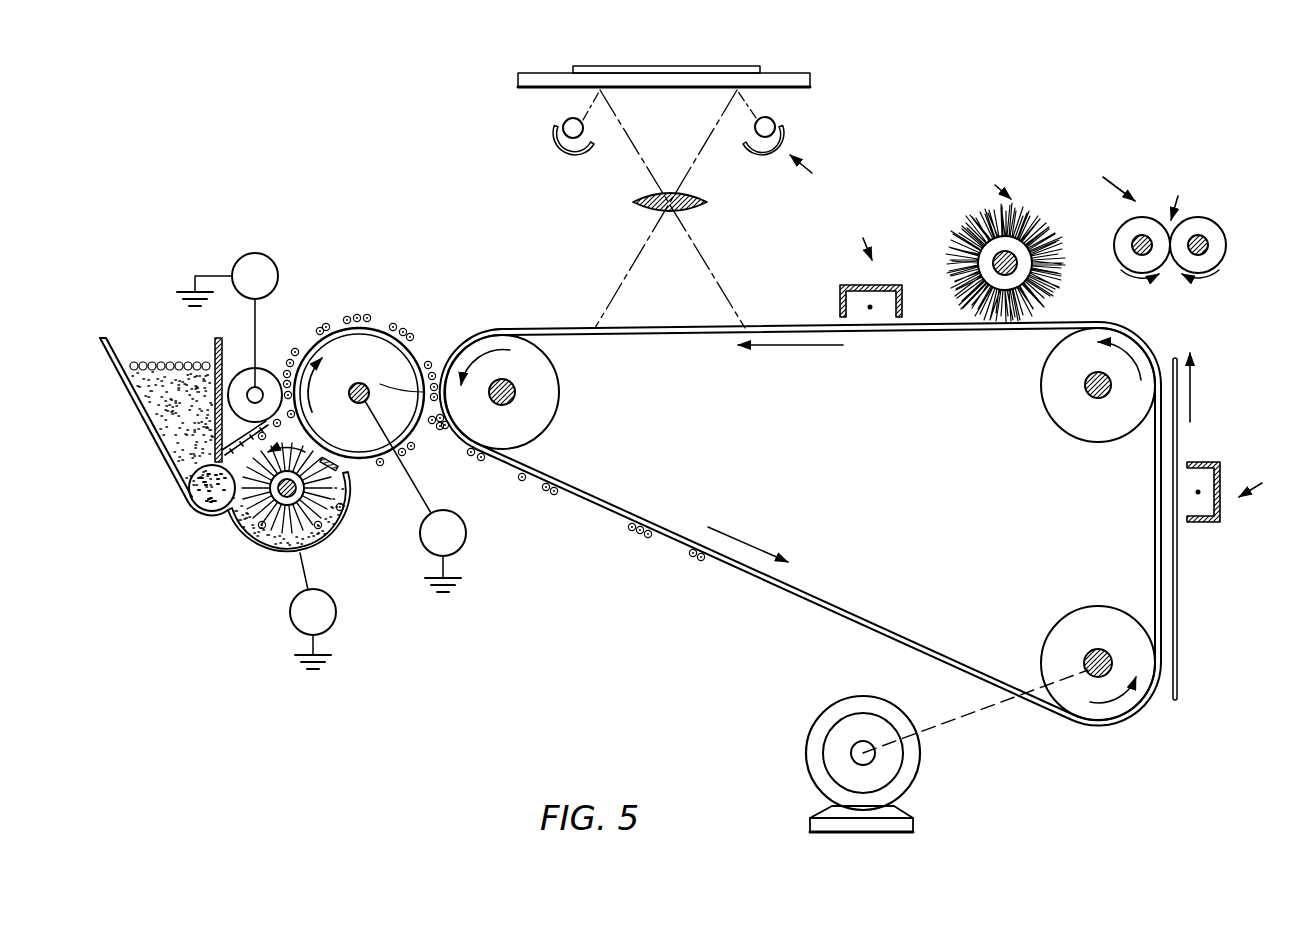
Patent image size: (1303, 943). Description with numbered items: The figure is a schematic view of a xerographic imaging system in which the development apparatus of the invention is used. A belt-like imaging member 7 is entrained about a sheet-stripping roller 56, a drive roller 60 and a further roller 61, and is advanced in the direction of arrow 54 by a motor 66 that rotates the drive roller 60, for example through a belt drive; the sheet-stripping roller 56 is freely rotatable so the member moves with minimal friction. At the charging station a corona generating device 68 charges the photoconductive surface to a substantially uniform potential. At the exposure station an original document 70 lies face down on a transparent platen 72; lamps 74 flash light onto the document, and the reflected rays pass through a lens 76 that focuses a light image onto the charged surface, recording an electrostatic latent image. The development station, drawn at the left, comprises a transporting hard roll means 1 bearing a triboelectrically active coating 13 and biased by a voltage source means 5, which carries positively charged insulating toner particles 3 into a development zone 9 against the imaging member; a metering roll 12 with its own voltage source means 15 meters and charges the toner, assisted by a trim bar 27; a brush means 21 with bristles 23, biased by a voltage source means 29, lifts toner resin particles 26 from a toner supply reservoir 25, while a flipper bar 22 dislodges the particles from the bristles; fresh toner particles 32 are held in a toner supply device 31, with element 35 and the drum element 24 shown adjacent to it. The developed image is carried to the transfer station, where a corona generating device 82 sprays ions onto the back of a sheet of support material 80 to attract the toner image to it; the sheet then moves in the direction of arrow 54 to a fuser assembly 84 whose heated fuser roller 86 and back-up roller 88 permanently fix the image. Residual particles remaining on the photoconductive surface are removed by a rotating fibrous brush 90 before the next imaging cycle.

The transporting hard roll means 1 is at (359, 370).
The toner particles 3 is at (401, 330).
The voltage source means 5 is at (459, 518).
The imaging member 7 is at (850, 502).
The development zone 9 is at (396, 377).
The metering roll 12 is at (270, 368).
The triboelectrically active coating 13 is at (331, 332).
The voltage source means 15 is at (276, 272).
The brush means 21 is at (343, 502).
The flipper bar 22 is at (336, 456).
The bristles 23 is at (342, 523).
The drum rotation 24 is at (317, 420).
The toner supply reservoir 25 is at (290, 552).
The toner resin particles 26 is at (243, 535).
The trim bar 27 is at (241, 433).
The voltage source means 29 is at (335, 602).
The toner supply device 31 is at (157, 457).
The toner particles 32 is at (170, 357).
The supply roller 35 is at (193, 510).
The arrow 54 is at (826, 350).
The sheet-stripping roller 56 is at (1042, 373).
The drive roller 60 is at (1065, 617).
The roller 61 is at (553, 391).
The motor 66 is at (838, 703).
The corona generating device 68 is at (898, 285).
The original document 70 is at (760, 68).
The transparent platen 72 is at (537, 67).
The lamps 74 is at (570, 134).
The lens 76 is at (696, 212).
The sheet of support material 80 is at (1180, 620).
The corona generating device 82 is at (1222, 513).
The fuser assembly 84 is at (1177, 222).
The heated fuser roller 86 is at (1120, 232).
The back-up roller 88 is at (1226, 236).
The fibrous brush 90 is at (958, 233).